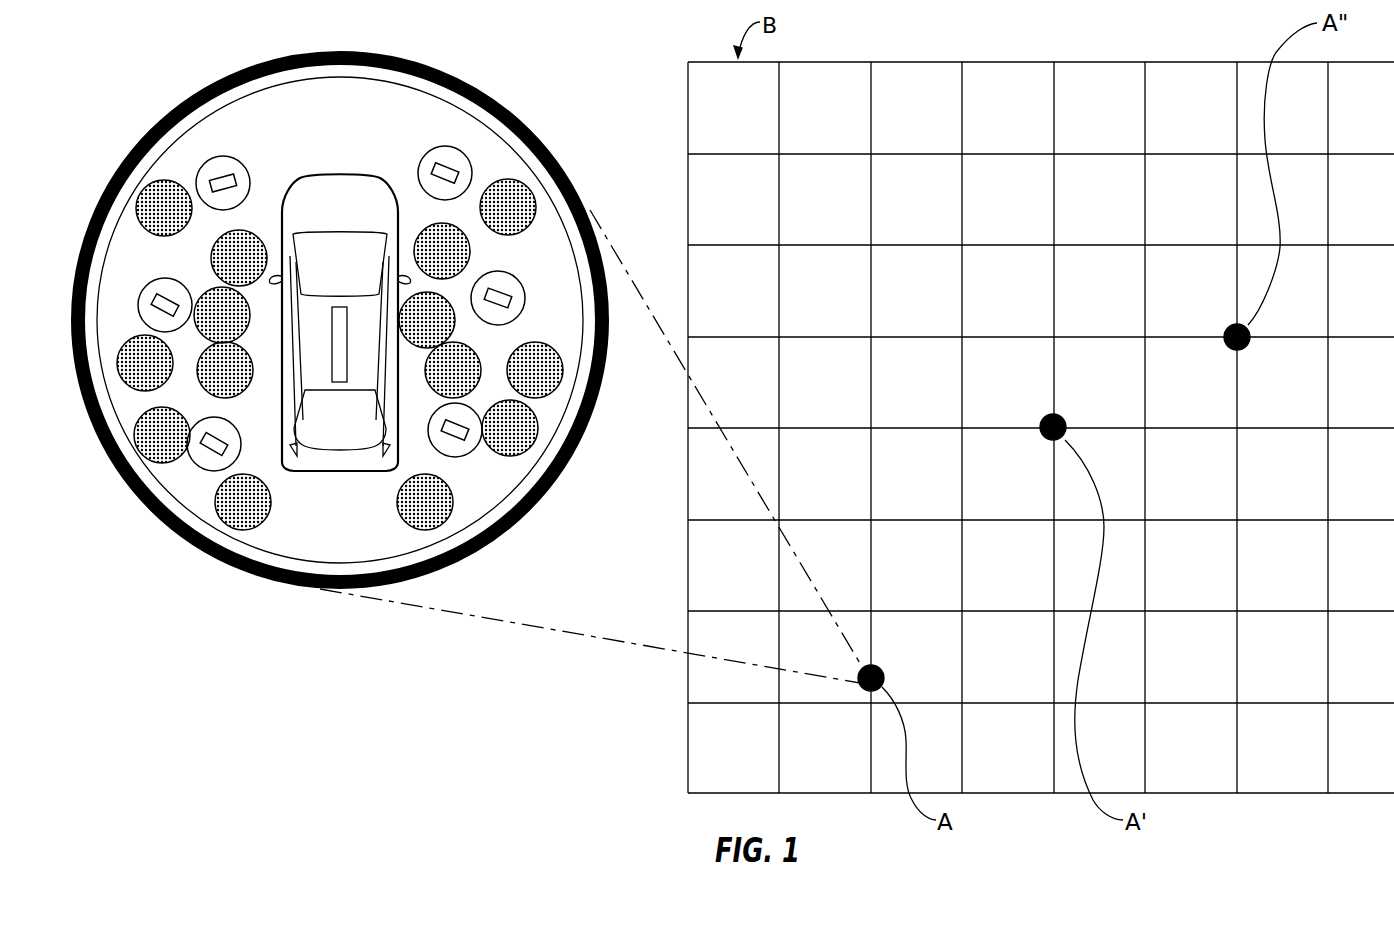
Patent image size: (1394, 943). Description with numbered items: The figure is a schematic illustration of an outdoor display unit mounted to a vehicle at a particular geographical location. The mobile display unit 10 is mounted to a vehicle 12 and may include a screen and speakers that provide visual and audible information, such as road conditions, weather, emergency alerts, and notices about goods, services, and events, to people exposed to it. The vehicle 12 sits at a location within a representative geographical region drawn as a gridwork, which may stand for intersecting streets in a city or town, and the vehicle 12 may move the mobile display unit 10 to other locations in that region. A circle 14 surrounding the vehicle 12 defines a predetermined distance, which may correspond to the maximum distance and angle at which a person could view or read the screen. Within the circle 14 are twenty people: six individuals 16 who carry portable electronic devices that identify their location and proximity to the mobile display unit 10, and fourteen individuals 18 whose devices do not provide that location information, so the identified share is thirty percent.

The mobile display unit 10 is at (333, 347).
The vehicle 12 is at (337, 193).
The circle 14 is at (108, 459).
The individuals 16 is at (212, 157).
The individuals 18 is at (525, 185).